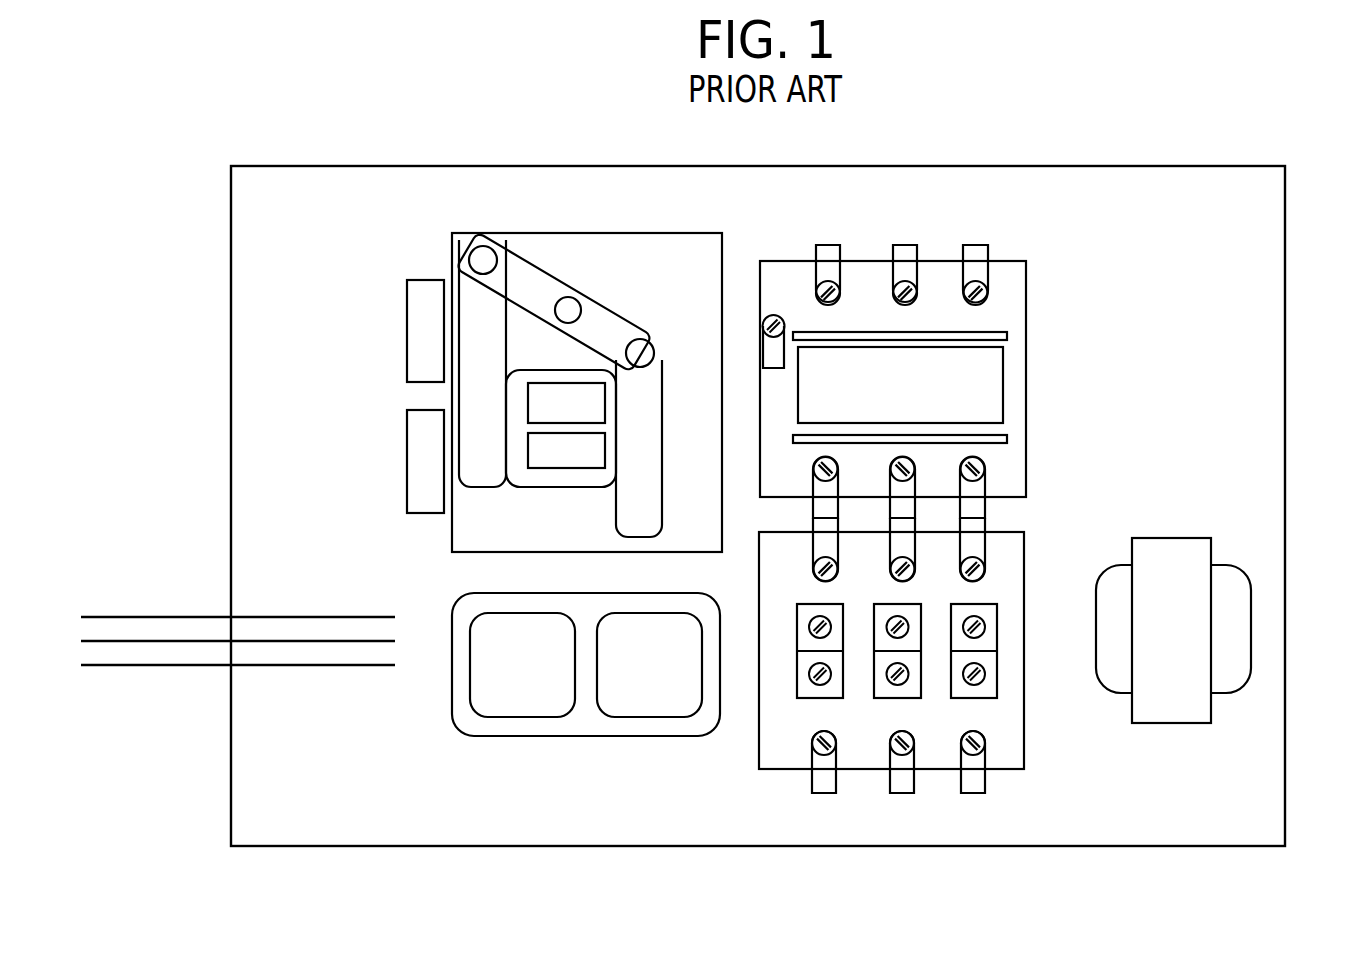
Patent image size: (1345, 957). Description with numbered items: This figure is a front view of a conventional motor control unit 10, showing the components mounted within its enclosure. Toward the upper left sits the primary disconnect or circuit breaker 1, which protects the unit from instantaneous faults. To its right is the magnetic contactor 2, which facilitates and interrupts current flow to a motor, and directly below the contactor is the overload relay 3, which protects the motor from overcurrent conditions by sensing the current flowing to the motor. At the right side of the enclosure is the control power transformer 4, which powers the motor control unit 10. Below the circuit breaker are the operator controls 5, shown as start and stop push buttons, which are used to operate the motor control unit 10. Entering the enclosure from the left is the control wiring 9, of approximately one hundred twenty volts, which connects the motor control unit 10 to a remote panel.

The circuit breaker 1 is at (587, 252).
The magnetic contactor 2 is at (905, 233).
The overload relay 3 is at (993, 782).
The control power transformer 4 is at (1257, 595).
The operator controls 5 is at (580, 745).
The control wiring 9 is at (163, 680).
The motor control unit 10 is at (440, 122).